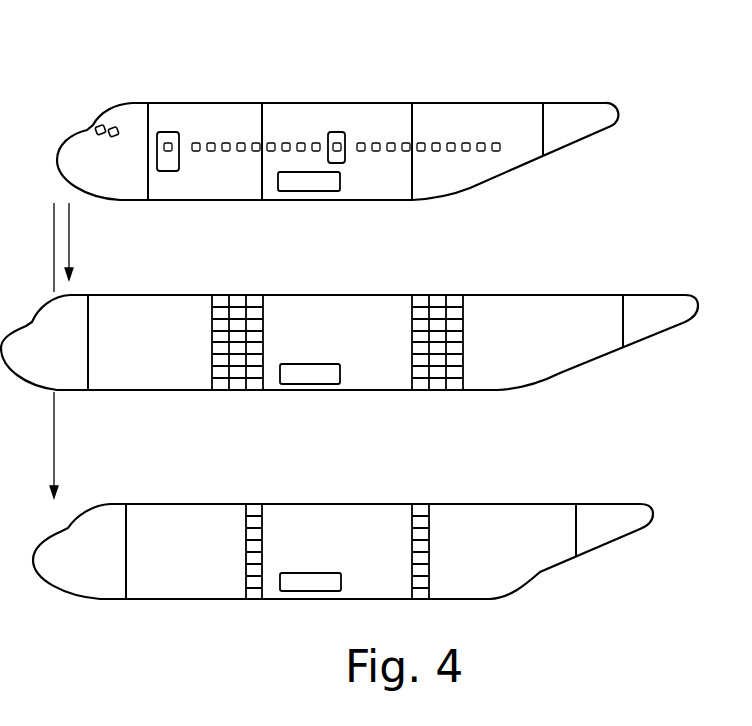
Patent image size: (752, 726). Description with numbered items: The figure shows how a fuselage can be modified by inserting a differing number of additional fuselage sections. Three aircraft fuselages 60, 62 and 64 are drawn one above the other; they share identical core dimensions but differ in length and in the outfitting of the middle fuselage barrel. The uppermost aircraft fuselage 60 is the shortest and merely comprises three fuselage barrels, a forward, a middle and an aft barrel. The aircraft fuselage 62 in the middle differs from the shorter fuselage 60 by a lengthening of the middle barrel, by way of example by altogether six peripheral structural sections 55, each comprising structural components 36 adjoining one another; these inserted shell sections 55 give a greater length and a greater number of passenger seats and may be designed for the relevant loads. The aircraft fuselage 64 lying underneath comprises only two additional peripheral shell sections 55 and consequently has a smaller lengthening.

The structural components 36 is at (218, 302).
The peripheral structural sections 55 is at (220, 405).
The aircraft fuselage 60 is at (337, 103).
The aircraft fuselage 62 is at (349, 298).
The aircraft fuselage 64 is at (343, 543).